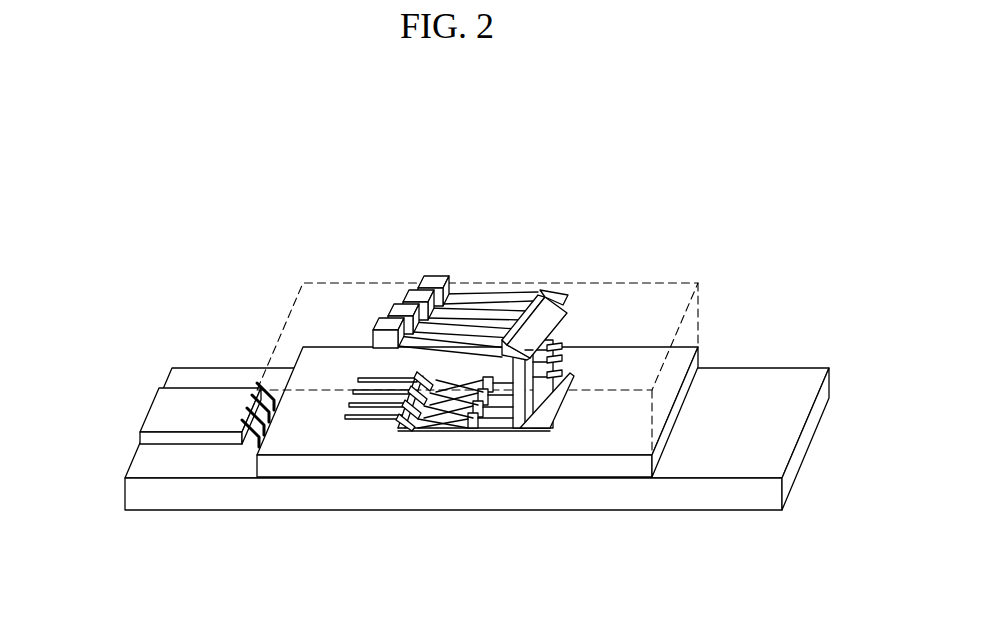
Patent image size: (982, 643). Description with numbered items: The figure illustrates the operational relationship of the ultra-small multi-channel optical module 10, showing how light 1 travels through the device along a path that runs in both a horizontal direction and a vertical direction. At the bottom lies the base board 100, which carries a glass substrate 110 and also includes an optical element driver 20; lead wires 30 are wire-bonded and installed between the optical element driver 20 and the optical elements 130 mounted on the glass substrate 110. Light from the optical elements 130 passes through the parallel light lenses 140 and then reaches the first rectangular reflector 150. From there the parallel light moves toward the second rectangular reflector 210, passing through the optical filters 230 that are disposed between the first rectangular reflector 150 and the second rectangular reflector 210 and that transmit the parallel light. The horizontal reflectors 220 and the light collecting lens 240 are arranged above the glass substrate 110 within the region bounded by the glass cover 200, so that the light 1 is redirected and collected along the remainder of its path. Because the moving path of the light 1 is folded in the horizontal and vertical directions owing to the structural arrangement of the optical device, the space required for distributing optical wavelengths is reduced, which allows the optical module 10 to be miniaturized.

The ultra-small multi-channel optical module 10 is at (471, 142).
The light 1 is at (574, 262).
The optical element driver 20 is at (145, 407).
The lead wires 30 is at (358, 378).
The base board 100 is at (765, 495).
The glass substrate 110 is at (290, 468).
The optical elements 130 is at (425, 436).
The parallel light lenses 140 is at (473, 434).
The first rectangular reflector 150 is at (547, 408).
The glass cover 200 is at (647, 303).
The second rectangular reflector 210 is at (540, 327).
The horizontal reflectors 220 is at (425, 278).
The optical filters 230 is at (530, 352).
The light collecting lens 240 is at (538, 291).